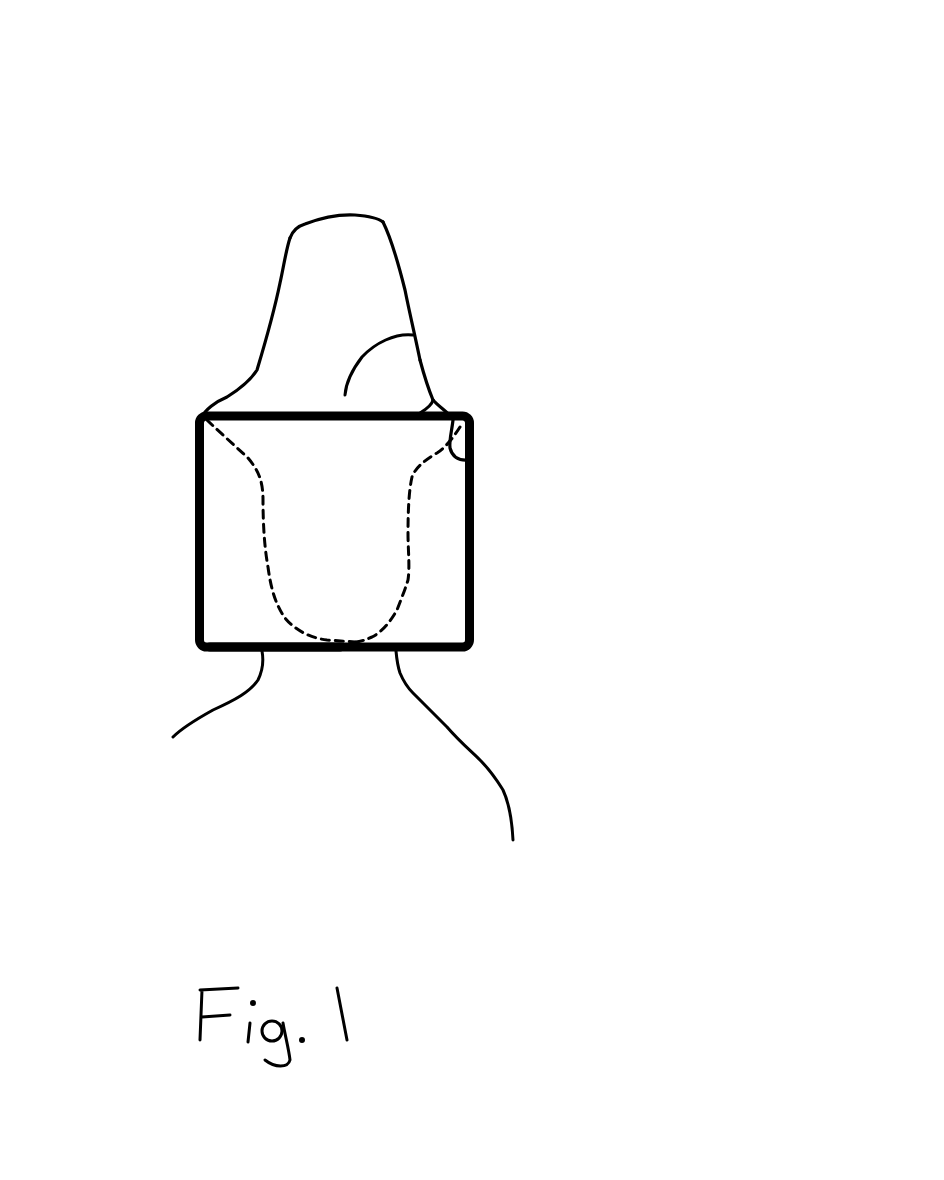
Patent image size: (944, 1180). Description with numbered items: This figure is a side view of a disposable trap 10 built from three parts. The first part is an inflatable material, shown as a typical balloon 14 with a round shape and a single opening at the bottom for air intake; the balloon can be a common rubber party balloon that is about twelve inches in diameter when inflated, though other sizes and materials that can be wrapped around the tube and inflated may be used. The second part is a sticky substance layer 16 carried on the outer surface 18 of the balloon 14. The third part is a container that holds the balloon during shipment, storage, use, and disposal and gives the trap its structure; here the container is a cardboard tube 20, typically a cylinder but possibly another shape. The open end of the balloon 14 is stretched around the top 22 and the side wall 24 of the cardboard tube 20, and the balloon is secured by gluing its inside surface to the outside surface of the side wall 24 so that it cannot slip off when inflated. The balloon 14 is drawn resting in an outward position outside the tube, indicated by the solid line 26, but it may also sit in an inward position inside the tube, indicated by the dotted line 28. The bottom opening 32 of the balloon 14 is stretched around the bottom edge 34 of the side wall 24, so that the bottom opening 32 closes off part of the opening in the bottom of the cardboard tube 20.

The disposable trap 10 is at (647, 242).
The balloon 14 is at (413, 335).
The sticky substance layer 16 is at (383, 222).
The outer surface 18 is at (303, 255).
The cardboard tube 20 is at (453, 417).
The top 22 is at (420, 413).
The side wall 24 is at (223, 490).
The solid line 26 is at (337, 215).
The dotted line 28 is at (403, 600).
The bottom opening 32 is at (557, 903).
The bottom edge 34 is at (270, 644).